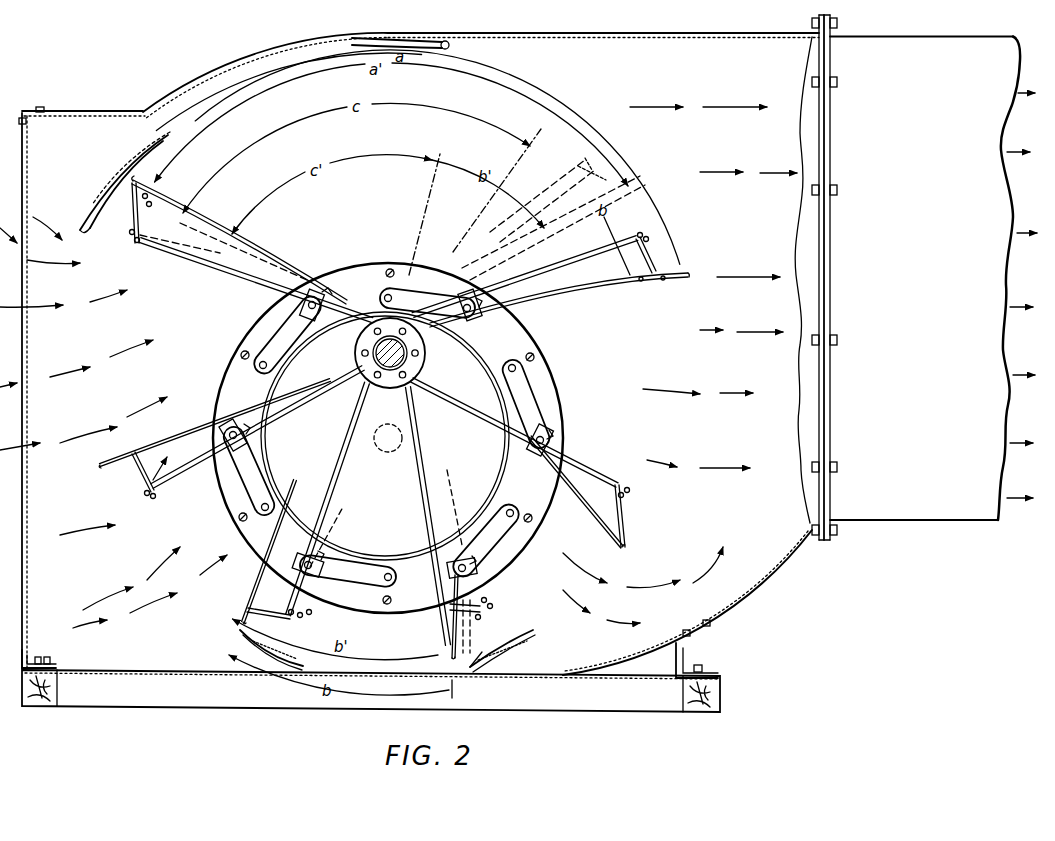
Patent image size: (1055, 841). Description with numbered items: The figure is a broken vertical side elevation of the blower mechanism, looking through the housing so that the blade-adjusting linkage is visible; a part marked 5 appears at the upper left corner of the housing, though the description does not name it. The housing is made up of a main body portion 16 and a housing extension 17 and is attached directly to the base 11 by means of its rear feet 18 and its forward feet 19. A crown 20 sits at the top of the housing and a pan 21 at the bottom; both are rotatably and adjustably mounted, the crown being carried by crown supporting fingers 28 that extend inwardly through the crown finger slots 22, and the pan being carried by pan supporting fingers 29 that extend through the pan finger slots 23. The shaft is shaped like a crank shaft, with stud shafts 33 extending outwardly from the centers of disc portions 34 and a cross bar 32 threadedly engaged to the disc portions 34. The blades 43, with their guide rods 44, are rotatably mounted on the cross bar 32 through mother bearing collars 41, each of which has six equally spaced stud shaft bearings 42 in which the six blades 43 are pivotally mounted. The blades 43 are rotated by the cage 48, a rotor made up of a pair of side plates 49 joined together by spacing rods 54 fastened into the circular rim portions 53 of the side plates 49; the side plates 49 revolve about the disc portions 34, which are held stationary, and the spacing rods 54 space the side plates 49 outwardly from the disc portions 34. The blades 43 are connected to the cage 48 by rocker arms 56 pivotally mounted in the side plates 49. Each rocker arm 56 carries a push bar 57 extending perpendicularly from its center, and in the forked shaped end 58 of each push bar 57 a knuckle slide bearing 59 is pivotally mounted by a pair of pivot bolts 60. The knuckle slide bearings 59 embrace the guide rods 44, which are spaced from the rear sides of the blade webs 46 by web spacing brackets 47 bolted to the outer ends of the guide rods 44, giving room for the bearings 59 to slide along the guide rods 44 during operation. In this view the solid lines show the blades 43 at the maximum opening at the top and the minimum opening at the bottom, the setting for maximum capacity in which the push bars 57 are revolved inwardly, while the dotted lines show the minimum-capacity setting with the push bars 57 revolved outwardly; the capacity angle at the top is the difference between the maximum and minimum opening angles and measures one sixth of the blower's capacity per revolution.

The fan housing 5 is at (23, 112).
The base 11 is at (57, 688).
The main body portion 16 is at (212, 69).
The housing extension 17 is at (907, 521).
The rear feet 18 is at (50, 664).
The forward feet 19 is at (684, 661).
The crown 20 is at (239, 143).
The pan 21 is at (478, 658).
The crown finger slots 22 is at (93, 218).
The pan finger slots 23 is at (240, 633).
The crown supporting fingers 28 is at (113, 182).
The pan supporting fingers 29 is at (267, 650).
The cross bar 32 is at (389, 351).
The stud shafts 33 is at (385, 452).
The disc portions 34 is at (464, 362).
The mother bearing collars 41 is at (350, 386).
The stud shaft bearings 42 is at (373, 333).
The blades 43 is at (228, 234).
The guide rods 44 is at (246, 280).
The blade webs 46 is at (137, 236).
The web spacing brackets 47 is at (134, 212).
The cage 48 is at (222, 500).
The side plates 49 is at (527, 337).
The circular rim portions 53 is at (506, 477).
The spacing rods 54 is at (241, 355).
The rocker arms 56 is at (262, 370).
The push bar 57 is at (283, 326).
The forked shaped end 58 is at (463, 285).
The knuckle slide bearing 59 is at (312, 300).
The pivot bolts 60 is at (327, 294).